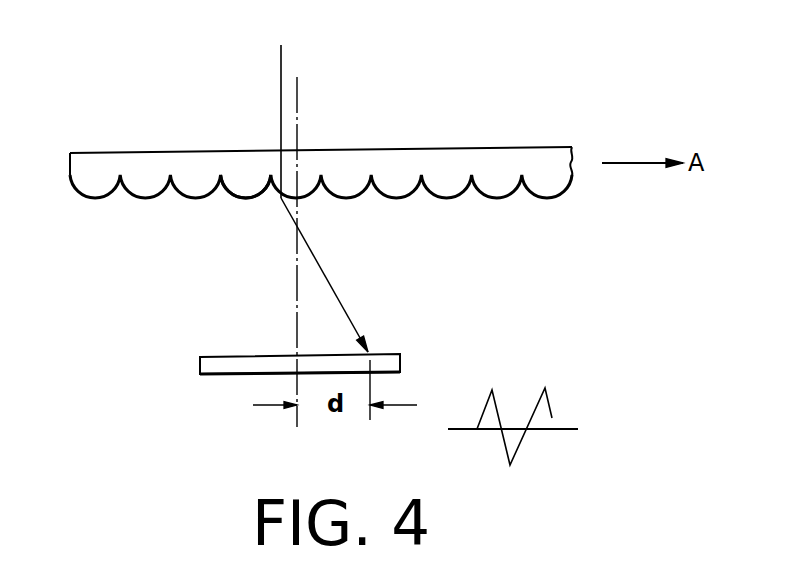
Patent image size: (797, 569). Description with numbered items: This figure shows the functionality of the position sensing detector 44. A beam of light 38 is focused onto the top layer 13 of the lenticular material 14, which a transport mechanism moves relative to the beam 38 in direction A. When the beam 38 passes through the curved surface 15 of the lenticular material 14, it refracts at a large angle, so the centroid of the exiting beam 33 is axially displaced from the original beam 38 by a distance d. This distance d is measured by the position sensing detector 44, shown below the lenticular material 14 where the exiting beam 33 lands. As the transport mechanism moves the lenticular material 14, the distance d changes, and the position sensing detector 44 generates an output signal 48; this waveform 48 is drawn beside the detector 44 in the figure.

The top layer 13 is at (150, 153).
The lenticular material 14 is at (95, 192).
The curved surface 15 is at (235, 200).
The exiting beam 33 is at (337, 290).
The beam of light 38 is at (281, 88).
The position sensing detector 44 is at (400, 362).
The output signal 48 is at (547, 395).